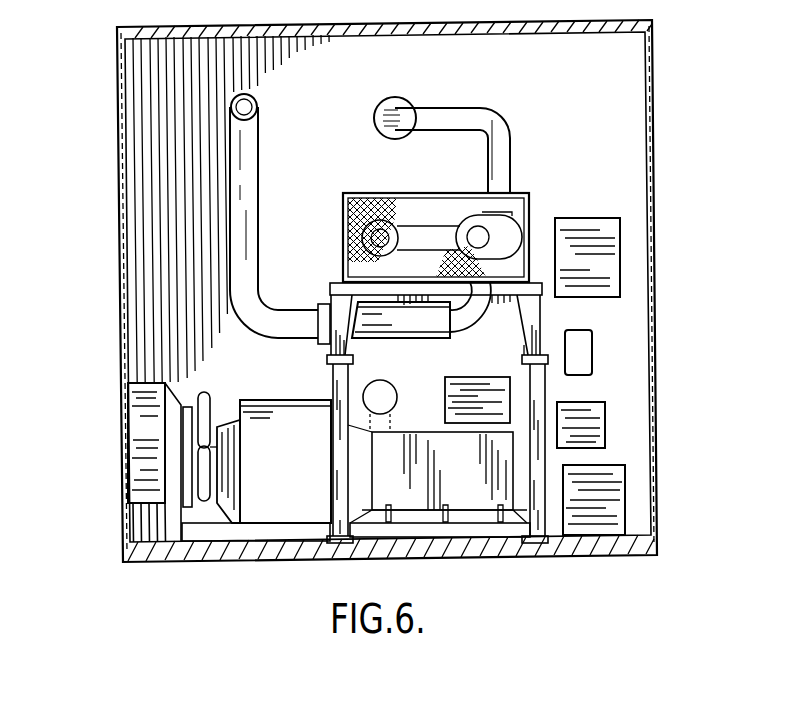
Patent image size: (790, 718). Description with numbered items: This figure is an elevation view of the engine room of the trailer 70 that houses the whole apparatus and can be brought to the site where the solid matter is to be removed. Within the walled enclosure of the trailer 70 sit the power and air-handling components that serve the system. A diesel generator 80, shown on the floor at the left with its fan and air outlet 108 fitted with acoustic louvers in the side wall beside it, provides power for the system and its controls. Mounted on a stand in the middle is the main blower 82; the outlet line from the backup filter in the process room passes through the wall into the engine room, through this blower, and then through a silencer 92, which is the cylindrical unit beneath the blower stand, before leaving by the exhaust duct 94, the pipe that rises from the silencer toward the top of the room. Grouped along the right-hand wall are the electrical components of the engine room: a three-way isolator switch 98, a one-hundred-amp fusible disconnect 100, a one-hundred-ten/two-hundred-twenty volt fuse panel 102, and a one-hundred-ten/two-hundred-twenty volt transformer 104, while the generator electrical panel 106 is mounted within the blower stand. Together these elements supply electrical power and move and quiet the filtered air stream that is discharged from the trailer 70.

The trailer 70 is at (658, 143).
The diesel generator 80 is at (287, 418).
The main blower 82 is at (440, 196).
The silencer 92 is at (367, 346).
The exhaust duct 94 is at (262, 140).
The three-way isolator switch 98 is at (607, 272).
The fusible disconnect 100 is at (597, 352).
The fuse panel 102 is at (607, 423).
The transformer 104 is at (630, 508).
The generator electrical panel 106 is at (485, 392).
The air outlet 108 is at (118, 446).